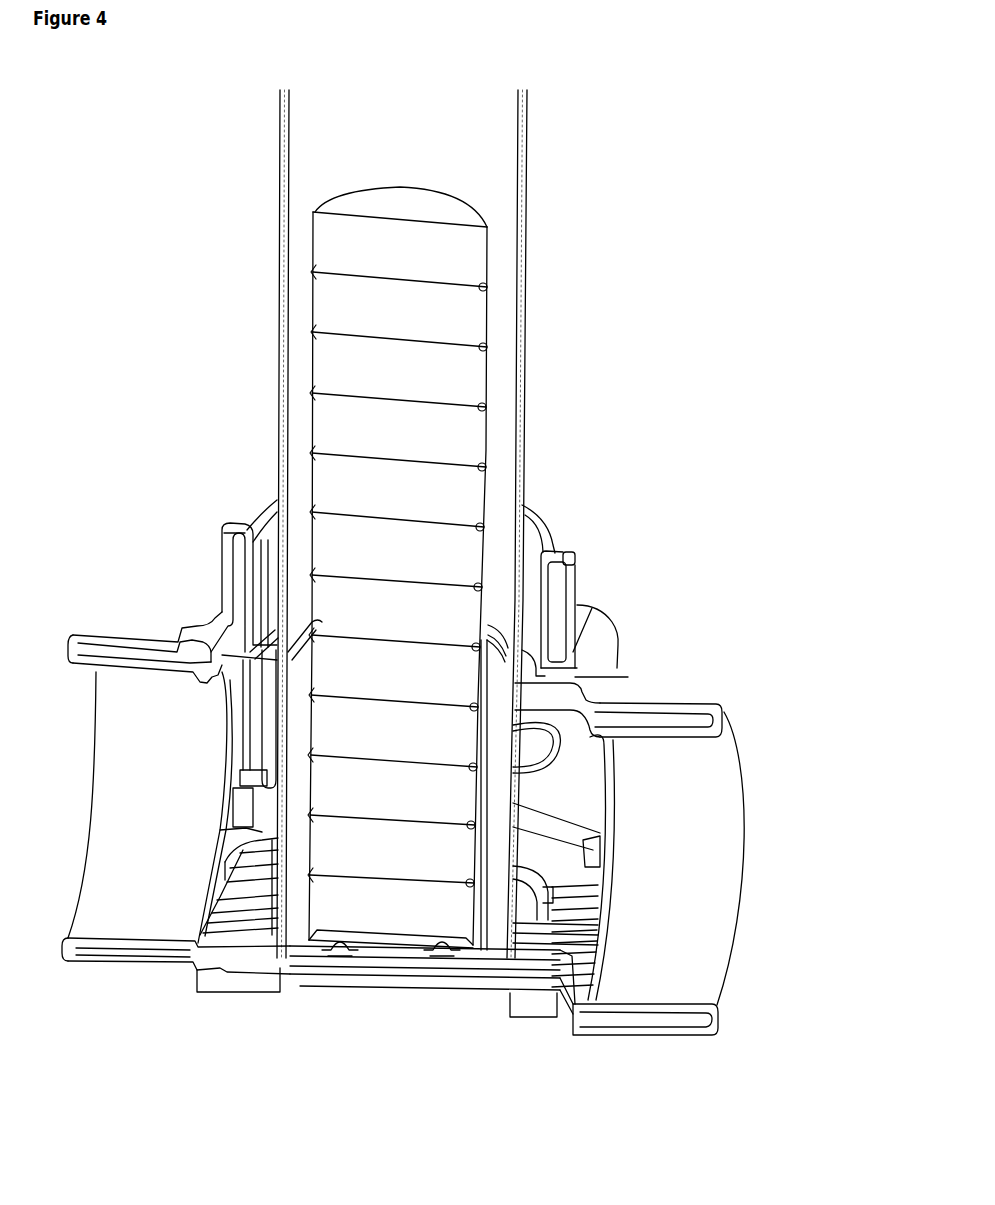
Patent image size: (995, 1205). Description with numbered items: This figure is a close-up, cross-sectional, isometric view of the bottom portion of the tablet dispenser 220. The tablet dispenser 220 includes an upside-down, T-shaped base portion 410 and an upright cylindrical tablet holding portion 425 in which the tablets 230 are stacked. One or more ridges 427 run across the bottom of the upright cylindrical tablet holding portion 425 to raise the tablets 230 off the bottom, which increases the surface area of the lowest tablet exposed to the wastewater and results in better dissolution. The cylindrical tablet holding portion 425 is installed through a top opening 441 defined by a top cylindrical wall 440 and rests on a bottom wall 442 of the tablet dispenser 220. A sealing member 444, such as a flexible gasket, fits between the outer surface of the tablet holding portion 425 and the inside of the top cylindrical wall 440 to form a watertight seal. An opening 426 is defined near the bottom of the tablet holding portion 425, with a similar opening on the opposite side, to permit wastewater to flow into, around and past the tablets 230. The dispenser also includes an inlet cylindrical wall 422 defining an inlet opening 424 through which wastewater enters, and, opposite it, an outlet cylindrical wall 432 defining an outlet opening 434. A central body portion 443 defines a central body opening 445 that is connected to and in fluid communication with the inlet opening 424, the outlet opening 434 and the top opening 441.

The tablet dispenser 220 is at (122, 483).
The tablets 230 is at (463, 297).
The base portion 410 is at (222, 595).
The inlet cylindrical wall 422 is at (72, 650).
The inlet opening 424 is at (117, 764).
The upright cylindrical tablet holding portion 425 is at (278, 318).
The opening 426 is at (489, 650).
The ridges 427 is at (442, 945).
The outlet cylindrical wall 432 is at (722, 715).
The outlet opening 434 is at (708, 772).
The top cylindrical wall 440 is at (577, 562).
The top opening 441 is at (533, 547).
The bottom wall 442 is at (288, 964).
The central body portion 443 is at (617, 618).
The sealing member 444 is at (524, 674).
The central body opening 445 is at (557, 808).